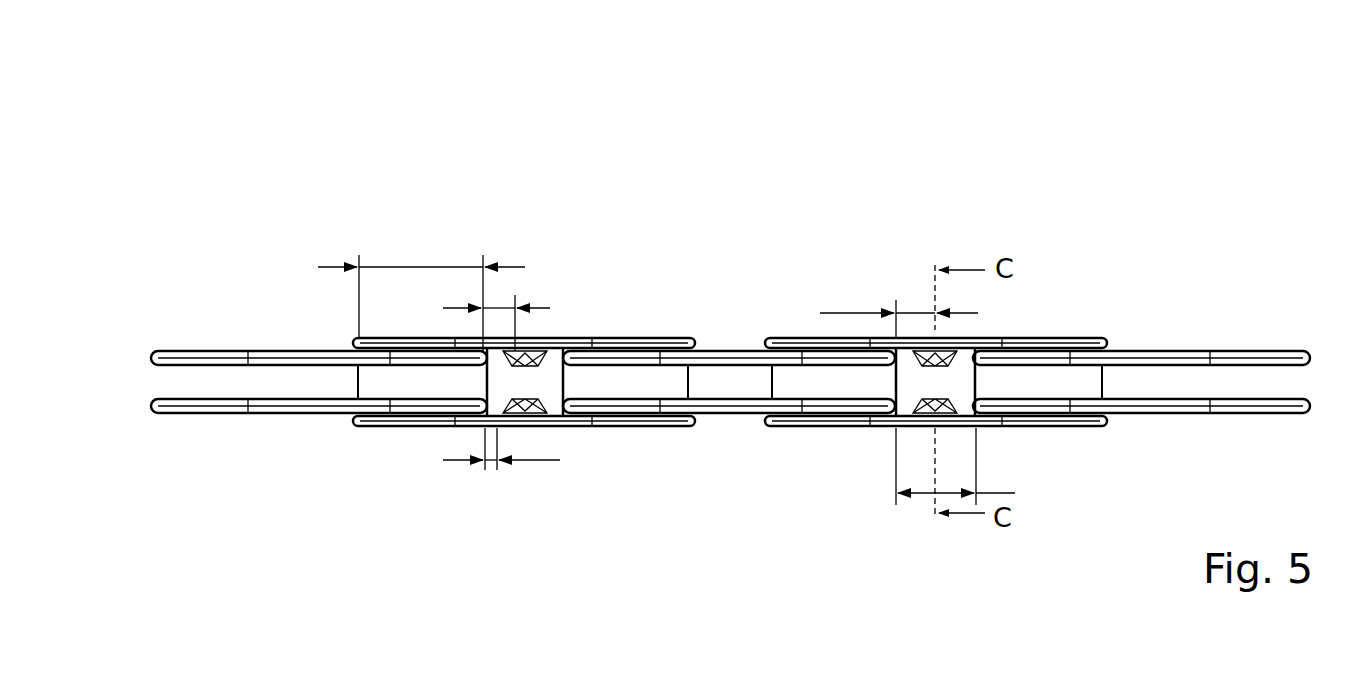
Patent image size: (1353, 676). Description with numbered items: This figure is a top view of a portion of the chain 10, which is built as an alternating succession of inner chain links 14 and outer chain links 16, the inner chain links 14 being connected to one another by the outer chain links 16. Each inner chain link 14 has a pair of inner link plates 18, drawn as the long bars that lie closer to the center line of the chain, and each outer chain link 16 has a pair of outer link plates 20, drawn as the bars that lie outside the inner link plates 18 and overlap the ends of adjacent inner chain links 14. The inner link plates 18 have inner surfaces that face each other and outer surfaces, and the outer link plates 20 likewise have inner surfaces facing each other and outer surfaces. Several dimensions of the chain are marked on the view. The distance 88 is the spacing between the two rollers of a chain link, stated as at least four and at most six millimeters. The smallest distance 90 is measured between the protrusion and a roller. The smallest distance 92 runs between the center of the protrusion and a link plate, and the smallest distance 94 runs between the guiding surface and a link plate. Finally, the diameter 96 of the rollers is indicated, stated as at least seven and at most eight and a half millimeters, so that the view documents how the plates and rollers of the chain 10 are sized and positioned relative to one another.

The chain 10 is at (598, 150).
The inner chain link 14 is at (275, 434).
The outer chain link 16 is at (588, 458).
The inner link plate 18 is at (264, 350).
The outer link plate 20 is at (582, 338).
The distance between the two rollers 88 is at (996, 493).
The smallest distance between the protrusion and a roller 90 is at (532, 462).
The smallest distance between the center of the protrusion and an inner link plate 92 is at (838, 310).
The smallest distance between the guiding surface and an inner link plate 94 is at (556, 307).
The diameter of the rollers 96 is at (440, 262).